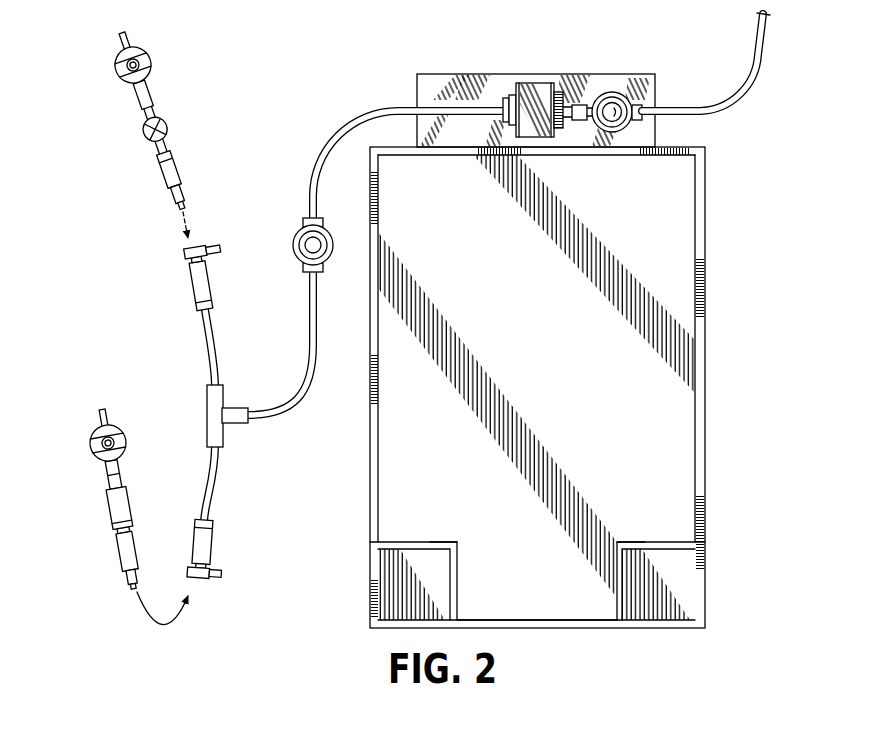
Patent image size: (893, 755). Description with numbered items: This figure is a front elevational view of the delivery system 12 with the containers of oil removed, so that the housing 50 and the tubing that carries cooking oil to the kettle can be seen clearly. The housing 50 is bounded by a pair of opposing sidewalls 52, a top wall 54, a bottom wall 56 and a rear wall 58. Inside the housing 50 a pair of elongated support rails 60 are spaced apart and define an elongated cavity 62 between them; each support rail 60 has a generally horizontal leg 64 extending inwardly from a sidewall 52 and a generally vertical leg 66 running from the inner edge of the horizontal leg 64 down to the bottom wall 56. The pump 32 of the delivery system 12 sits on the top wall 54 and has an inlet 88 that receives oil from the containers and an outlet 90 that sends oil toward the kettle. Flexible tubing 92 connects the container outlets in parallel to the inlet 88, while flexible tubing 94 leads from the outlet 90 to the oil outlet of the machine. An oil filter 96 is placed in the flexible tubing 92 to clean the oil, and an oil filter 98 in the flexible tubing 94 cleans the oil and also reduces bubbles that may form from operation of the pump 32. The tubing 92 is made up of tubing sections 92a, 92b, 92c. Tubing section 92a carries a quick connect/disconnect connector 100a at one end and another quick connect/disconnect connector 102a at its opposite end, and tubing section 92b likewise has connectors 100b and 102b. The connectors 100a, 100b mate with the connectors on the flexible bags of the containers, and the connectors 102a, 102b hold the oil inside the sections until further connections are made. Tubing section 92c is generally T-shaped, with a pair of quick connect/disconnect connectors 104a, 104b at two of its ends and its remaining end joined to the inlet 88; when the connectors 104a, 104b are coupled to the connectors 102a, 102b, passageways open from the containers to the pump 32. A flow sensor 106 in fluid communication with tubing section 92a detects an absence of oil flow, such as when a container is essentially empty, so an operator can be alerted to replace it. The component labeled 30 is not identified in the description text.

The delivery system 12 is at (258, 30).
The pump 30 is at (438, 74).
The pump 32 is at (528, 83).
The housing 50 is at (548, 384).
The sidewalls 52 is at (707, 223).
The top wall 54 is at (678, 148).
The bottom wall 56 is at (680, 630).
The rear wall 58 is at (520, 323).
The support rails 60 is at (441, 539).
The cavity 62 is at (530, 552).
The horizontal leg 64 is at (401, 542).
The vertical leg 66 is at (460, 589).
The inlet 88 is at (500, 101).
The outlet 90 is at (565, 93).
The flexible tubing 92 is at (370, 93).
The tubing section 92a is at (117, 498).
The tubing section 92b is at (182, 119).
The tubing section 92c is at (352, 118).
The flexible tubing 94 is at (732, 83).
The oil filter 96 is at (291, 245).
The oil filter 98 is at (612, 91).
The quick connect/disconnect connector 100a is at (128, 440).
The quick connect/disconnect connector 100b is at (152, 60).
The quick connect/disconnect connector 102a is at (122, 577).
The quick connect/disconnect connector 102b is at (186, 190).
The quick connect/disconnect connector 104a is at (212, 558).
The quick connect/disconnect connector 104b is at (186, 265).
The flow sensor 106 is at (126, 505).